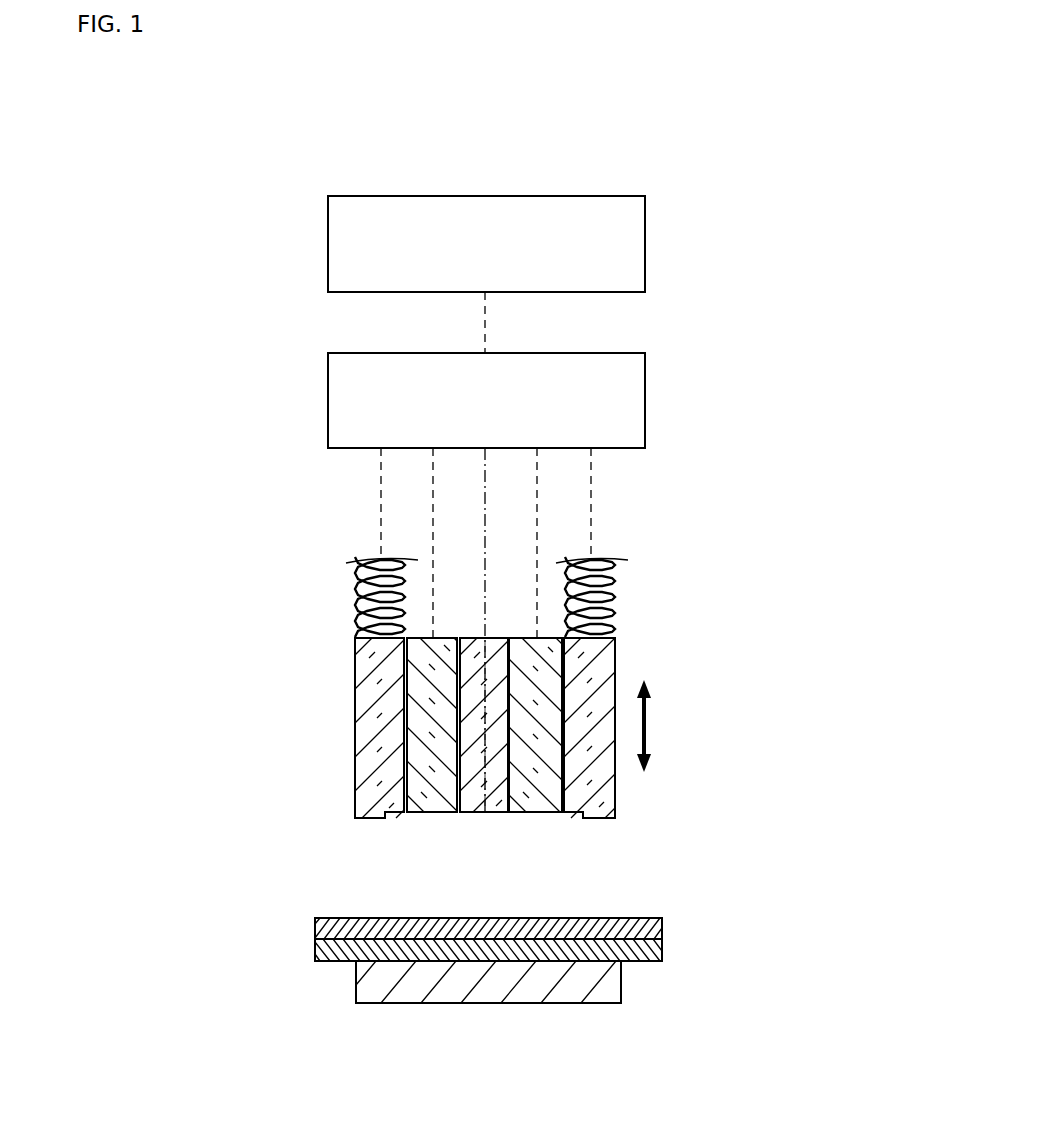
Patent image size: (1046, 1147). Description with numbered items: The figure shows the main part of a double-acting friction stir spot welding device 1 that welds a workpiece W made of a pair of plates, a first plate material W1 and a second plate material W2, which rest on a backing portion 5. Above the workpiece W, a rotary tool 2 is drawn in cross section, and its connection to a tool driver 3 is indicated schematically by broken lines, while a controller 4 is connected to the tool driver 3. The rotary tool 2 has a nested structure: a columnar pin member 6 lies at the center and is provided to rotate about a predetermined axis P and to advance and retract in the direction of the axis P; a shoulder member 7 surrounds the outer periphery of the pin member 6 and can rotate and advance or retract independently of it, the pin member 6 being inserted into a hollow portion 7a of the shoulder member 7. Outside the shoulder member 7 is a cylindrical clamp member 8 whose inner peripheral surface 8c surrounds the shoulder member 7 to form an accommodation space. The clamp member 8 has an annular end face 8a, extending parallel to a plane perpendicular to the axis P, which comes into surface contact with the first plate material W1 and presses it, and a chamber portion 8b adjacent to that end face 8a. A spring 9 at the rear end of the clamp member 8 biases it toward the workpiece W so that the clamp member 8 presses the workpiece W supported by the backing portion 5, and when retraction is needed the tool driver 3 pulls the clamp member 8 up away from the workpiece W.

The double-acting friction stir spot welding device 1 is at (764, 189).
The rotary tool 2 is at (499, 721).
The tool driver 3 is at (646, 402).
The controller 4 is at (646, 245).
The backing portion 5 is at (622, 978).
The pin member 6 is at (468, 770).
The shoulder member 7 is at (452, 745).
The hollow portion 7a is at (458, 770).
The clamp member 8 is at (355, 662).
The end face 8a is at (372, 822).
The chamber portion 8b is at (389, 816).
The inner peripheral surface 8c is at (404, 690).
The spring 9 is at (352, 596).
The axis P is at (540, 697).
The workpiece W is at (551, 942).
The first plate material W1 is at (664, 928).
The second plate material W2 is at (664, 950).